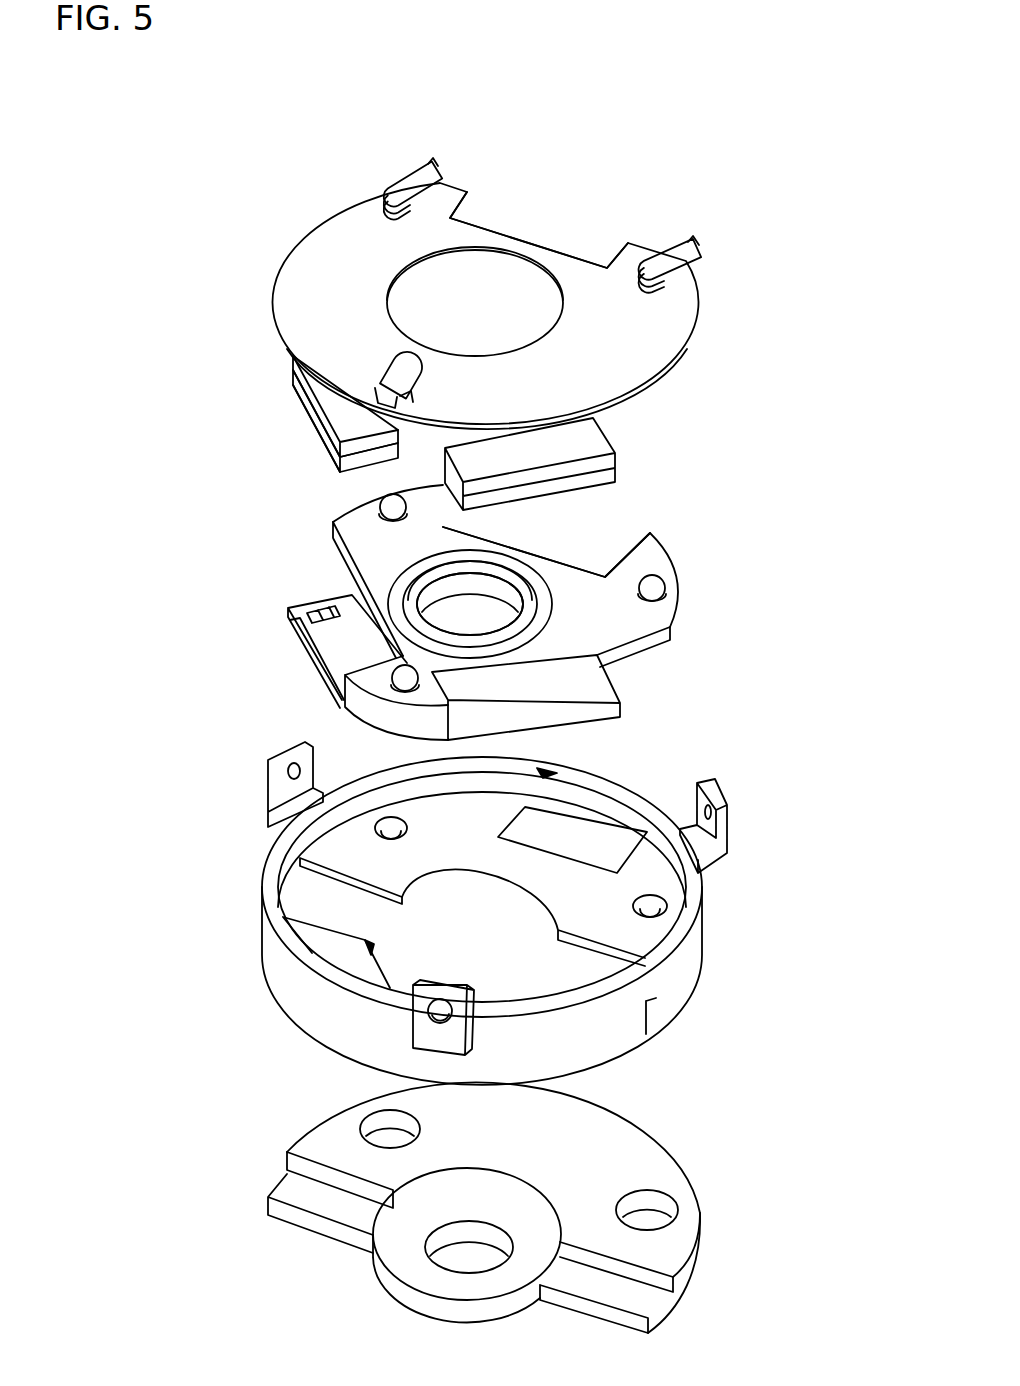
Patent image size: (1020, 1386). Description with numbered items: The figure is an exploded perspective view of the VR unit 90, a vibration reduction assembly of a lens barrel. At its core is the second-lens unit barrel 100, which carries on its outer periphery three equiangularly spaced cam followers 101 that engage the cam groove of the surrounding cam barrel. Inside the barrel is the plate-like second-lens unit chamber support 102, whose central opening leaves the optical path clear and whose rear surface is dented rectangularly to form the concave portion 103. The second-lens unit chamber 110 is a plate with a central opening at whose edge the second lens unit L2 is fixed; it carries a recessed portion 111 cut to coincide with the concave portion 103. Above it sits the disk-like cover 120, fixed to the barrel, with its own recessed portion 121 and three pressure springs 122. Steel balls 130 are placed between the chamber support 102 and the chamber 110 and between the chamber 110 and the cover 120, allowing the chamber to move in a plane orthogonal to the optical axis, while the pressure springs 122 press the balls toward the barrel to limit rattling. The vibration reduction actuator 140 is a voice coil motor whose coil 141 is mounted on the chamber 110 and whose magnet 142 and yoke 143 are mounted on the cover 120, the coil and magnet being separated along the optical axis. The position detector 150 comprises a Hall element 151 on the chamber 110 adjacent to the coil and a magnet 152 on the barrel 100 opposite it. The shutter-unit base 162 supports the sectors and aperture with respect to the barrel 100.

The VR unit 90 is at (150, 185).
The second-lens unit barrel 100 is at (258, 945).
The cam followers 101 is at (731, 802).
The second-lens unit chamber support 102 is at (622, 938).
The concave portion 103 is at (594, 846).
The second-lens unit chamber 110 is at (718, 537).
The recessed portion 111 is at (578, 562).
The cover 120 is at (712, 332).
The recessed portion 121 is at (553, 250).
The pressure springs 122 is at (403, 190).
The steel balls 130 is at (656, 590).
The vibration reduction actuator 140 is at (210, 437).
The coil 141 is at (360, 638).
The magnet 142 is at (327, 445).
The yoke 143 is at (305, 389).
The position detector 150 is at (181, 735).
The Hall element 151 is at (303, 635).
The magnet 152 is at (324, 953).
The shutter-unit base 162 is at (665, 1245).
The second lens unit L2 is at (510, 605).